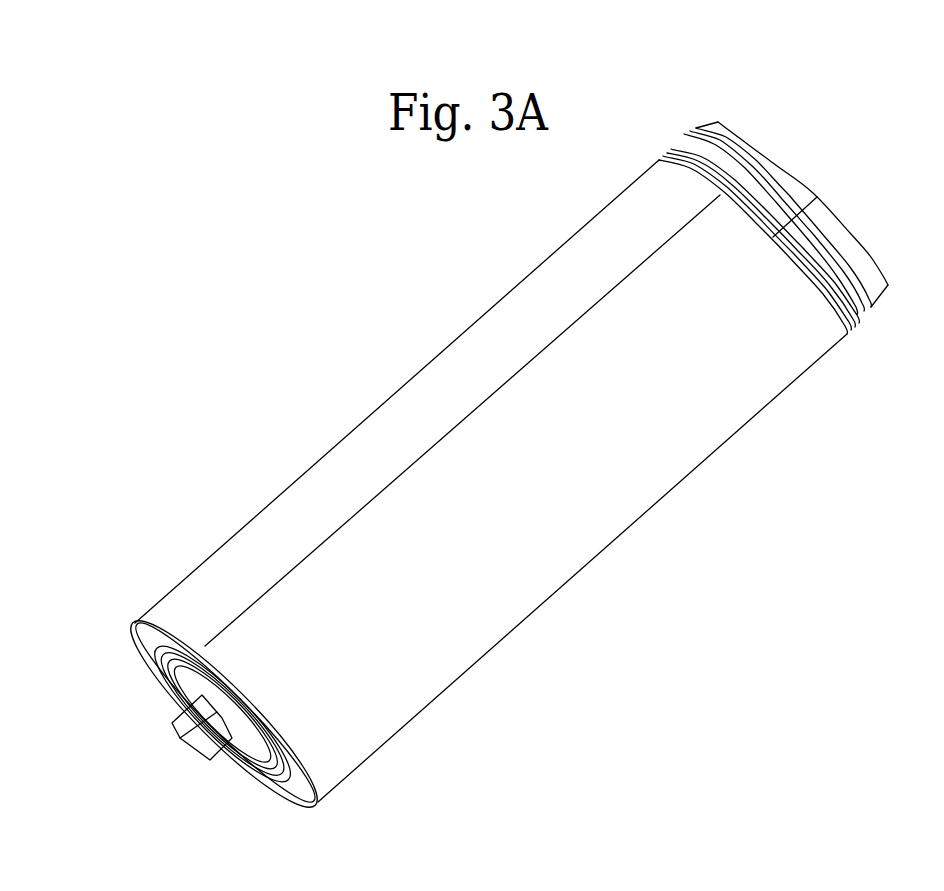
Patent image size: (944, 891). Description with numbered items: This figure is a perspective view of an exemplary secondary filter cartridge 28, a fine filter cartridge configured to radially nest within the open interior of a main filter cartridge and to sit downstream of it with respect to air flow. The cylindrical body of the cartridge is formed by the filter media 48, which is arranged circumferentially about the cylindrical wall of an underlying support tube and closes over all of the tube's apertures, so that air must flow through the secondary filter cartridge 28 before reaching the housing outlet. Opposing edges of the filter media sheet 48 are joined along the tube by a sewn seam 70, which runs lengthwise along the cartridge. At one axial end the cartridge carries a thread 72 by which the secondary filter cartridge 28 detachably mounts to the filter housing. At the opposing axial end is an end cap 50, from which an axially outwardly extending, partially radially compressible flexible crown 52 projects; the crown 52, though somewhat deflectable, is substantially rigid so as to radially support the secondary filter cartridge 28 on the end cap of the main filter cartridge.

The secondary filter cartridge 28 is at (238, 336).
The filter media 48 is at (470, 355).
The end cap 50 is at (143, 645).
The flexible crown 52 is at (215, 752).
The sewn seam 70 is at (572, 327).
The thread 72 is at (695, 133).